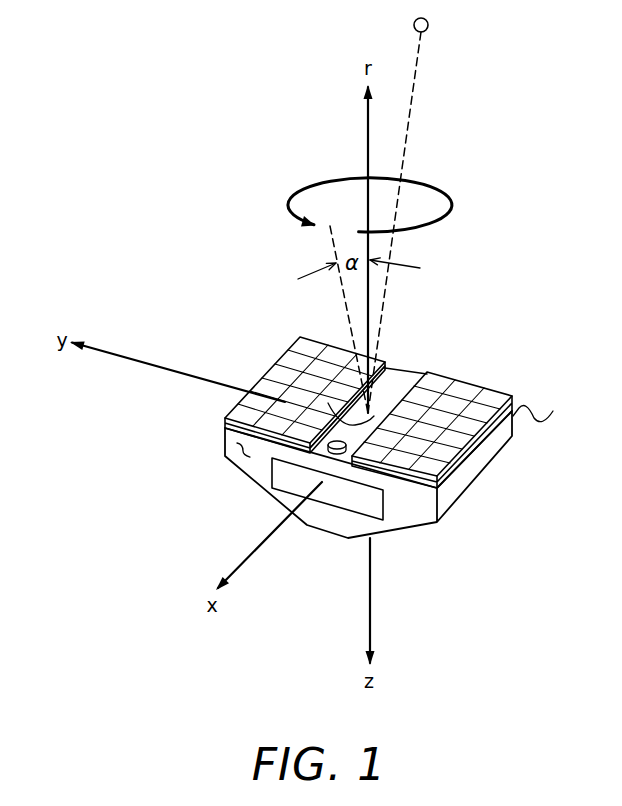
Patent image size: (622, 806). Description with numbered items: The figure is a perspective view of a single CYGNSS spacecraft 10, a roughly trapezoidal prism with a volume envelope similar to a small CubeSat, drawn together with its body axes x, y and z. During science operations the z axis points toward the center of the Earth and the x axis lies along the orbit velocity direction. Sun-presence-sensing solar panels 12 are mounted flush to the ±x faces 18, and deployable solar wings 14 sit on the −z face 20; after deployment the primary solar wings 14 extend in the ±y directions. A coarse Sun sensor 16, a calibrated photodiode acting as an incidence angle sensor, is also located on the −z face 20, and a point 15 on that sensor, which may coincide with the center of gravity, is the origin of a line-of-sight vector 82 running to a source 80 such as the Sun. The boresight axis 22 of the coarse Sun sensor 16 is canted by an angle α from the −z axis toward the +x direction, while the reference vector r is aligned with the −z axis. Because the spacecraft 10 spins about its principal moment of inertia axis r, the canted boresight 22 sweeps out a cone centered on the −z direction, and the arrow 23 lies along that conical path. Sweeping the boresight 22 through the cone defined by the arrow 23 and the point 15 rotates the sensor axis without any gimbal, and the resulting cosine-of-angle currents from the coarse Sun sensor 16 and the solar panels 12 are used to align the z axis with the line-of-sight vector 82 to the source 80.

The spacecraft 10 is at (480, 482).
The solar panels 12 is at (272, 480).
The solar wings 14 is at (281, 379).
The point 15 is at (338, 410).
The coarse Sun sensor 16 is at (380, 381).
The ±x faces 18 is at (225, 456).
The −z face 20 is at (372, 412).
The boresight axis 22 is at (332, 245).
The arrow 23 is at (335, 181).
The source 80 is at (428, 31).
The line-of-sight vector 82 is at (410, 113).